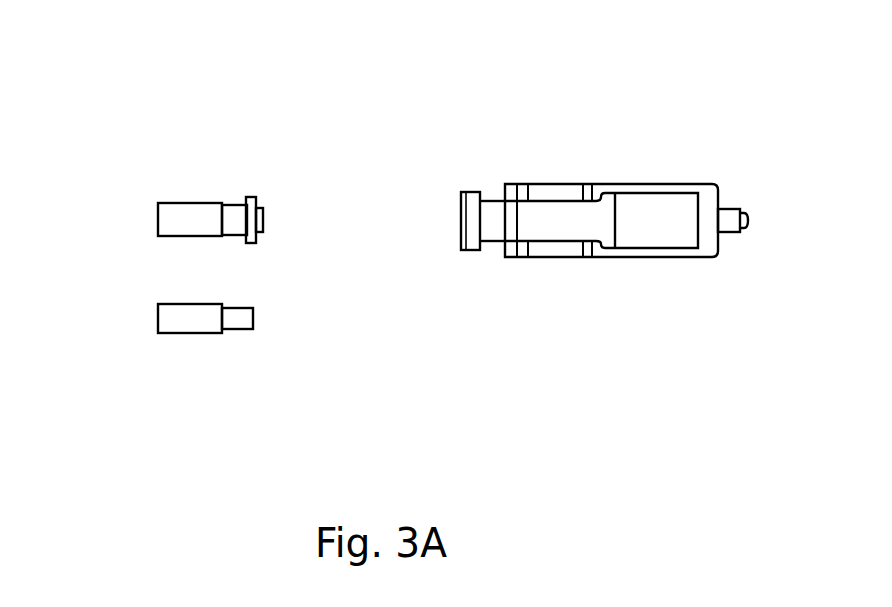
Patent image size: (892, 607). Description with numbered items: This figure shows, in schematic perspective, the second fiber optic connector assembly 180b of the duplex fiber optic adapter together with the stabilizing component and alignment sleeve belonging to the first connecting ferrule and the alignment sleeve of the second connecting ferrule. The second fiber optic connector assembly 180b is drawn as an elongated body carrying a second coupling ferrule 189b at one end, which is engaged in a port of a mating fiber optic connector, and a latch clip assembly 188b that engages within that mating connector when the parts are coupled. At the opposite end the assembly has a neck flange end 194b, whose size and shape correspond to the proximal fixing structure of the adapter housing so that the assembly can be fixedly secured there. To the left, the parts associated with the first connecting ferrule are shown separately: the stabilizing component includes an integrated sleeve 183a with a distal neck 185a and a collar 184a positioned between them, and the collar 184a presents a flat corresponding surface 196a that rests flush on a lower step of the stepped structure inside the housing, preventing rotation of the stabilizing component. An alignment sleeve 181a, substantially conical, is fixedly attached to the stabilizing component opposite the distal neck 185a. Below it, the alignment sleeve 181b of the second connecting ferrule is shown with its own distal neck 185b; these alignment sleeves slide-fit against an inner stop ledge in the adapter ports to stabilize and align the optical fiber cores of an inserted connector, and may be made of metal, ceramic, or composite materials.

The alignment sleeve 181a is at (186, 202).
The integrated sleeve 183a is at (232, 197).
The collar 184a is at (253, 203).
The distal neck 185a is at (266, 204).
The corresponding surface of the collar 196a is at (255, 241).
The alignment sleeve 181b is at (193, 334).
The distal neck 185b is at (240, 333).
The second fiber optic connector assembly 180b is at (700, 256).
The latch clip assembly 188b is at (512, 240).
The second coupling ferrule 189b is at (745, 230).
The neck flange end 194b is at (478, 191).